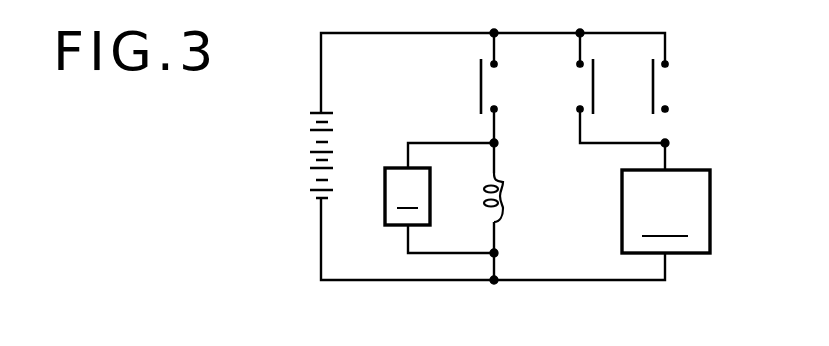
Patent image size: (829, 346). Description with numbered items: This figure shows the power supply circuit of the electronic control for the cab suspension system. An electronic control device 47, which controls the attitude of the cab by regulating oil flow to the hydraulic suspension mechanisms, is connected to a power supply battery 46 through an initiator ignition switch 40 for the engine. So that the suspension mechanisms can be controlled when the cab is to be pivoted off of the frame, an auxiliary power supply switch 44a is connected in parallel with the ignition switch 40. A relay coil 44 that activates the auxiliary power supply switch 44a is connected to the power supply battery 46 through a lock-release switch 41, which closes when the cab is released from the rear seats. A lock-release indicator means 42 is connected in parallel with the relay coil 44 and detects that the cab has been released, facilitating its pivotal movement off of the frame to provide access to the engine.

The ignition switch 40 is at (655, 82).
The lock-release switch 41 is at (480, 87).
The lock-release indicator means 42 is at (407, 196).
The relay coil 44 is at (503, 182).
The auxiliary power supply switch 44a is at (593, 80).
The power supply battery 46 is at (310, 130).
The electronic control device 47 is at (666, 211).